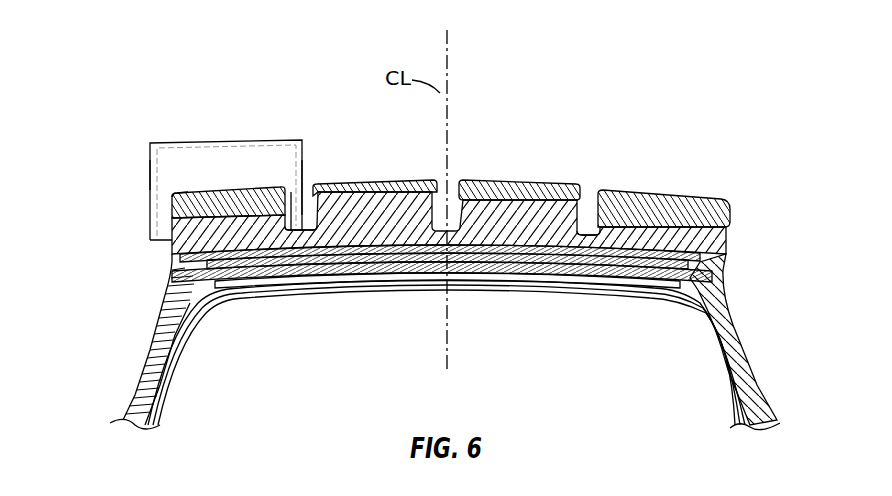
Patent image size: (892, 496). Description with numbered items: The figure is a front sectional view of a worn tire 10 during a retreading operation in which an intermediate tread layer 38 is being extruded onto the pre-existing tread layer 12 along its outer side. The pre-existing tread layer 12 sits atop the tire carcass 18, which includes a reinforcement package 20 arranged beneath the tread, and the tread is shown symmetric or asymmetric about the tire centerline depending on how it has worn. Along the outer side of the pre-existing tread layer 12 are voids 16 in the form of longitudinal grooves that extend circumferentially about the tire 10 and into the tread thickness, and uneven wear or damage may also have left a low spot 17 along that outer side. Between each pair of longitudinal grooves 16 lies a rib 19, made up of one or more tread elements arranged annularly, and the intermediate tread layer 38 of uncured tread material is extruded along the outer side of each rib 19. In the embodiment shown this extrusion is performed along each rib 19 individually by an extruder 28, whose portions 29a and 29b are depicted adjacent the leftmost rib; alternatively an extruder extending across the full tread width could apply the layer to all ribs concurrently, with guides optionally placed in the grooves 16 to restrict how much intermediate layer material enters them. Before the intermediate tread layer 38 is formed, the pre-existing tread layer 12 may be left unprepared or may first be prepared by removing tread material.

The tire 10 is at (139, 40).
The pre-existing tread layer 12 is at (712, 247).
The voids 16 is at (293, 230).
The low spot 17 is at (240, 218).
The tire carcass 18 is at (757, 387).
The rib 19 is at (176, 250).
The reinforcement package 20 is at (697, 284).
The extruder 28 is at (230, 157).
The shield tread portion 29a is at (188, 197).
The shield side portion 29b is at (158, 173).
The intermediate tread layer 38 is at (170, 205).